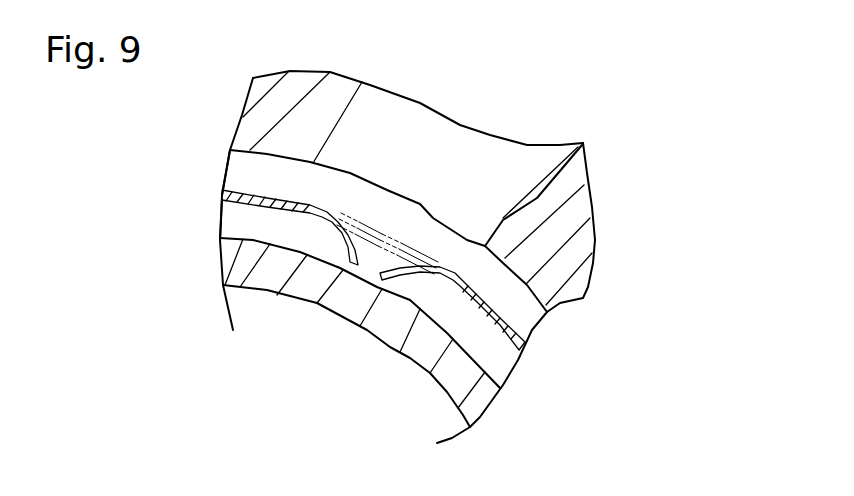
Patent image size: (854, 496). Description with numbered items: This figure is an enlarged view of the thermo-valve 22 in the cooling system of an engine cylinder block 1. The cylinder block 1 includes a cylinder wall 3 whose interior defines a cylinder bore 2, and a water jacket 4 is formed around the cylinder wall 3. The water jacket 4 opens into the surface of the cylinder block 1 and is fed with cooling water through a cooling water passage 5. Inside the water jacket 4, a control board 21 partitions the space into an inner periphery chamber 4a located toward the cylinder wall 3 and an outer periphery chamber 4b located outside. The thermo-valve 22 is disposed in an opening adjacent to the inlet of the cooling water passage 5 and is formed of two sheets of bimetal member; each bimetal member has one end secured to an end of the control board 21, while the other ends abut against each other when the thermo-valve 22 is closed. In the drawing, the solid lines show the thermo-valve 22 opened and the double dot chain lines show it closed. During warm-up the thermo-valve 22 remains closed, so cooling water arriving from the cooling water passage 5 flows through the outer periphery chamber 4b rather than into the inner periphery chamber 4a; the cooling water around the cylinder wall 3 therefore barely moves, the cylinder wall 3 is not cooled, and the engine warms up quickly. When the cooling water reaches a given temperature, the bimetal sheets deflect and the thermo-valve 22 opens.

The cylinder block 1 is at (612, 208).
The cylinder bore 2 is at (343, 362).
The cylinder wall 3 is at (460, 358).
The water jacket 4 is at (493, 360).
The inner periphery chamber 4a is at (233, 213).
The outer periphery chamber 4b is at (230, 152).
The cooling water passage 5 is at (422, 130).
The control board 21 is at (222, 190).
The thermo-valve 22 is at (305, 258).